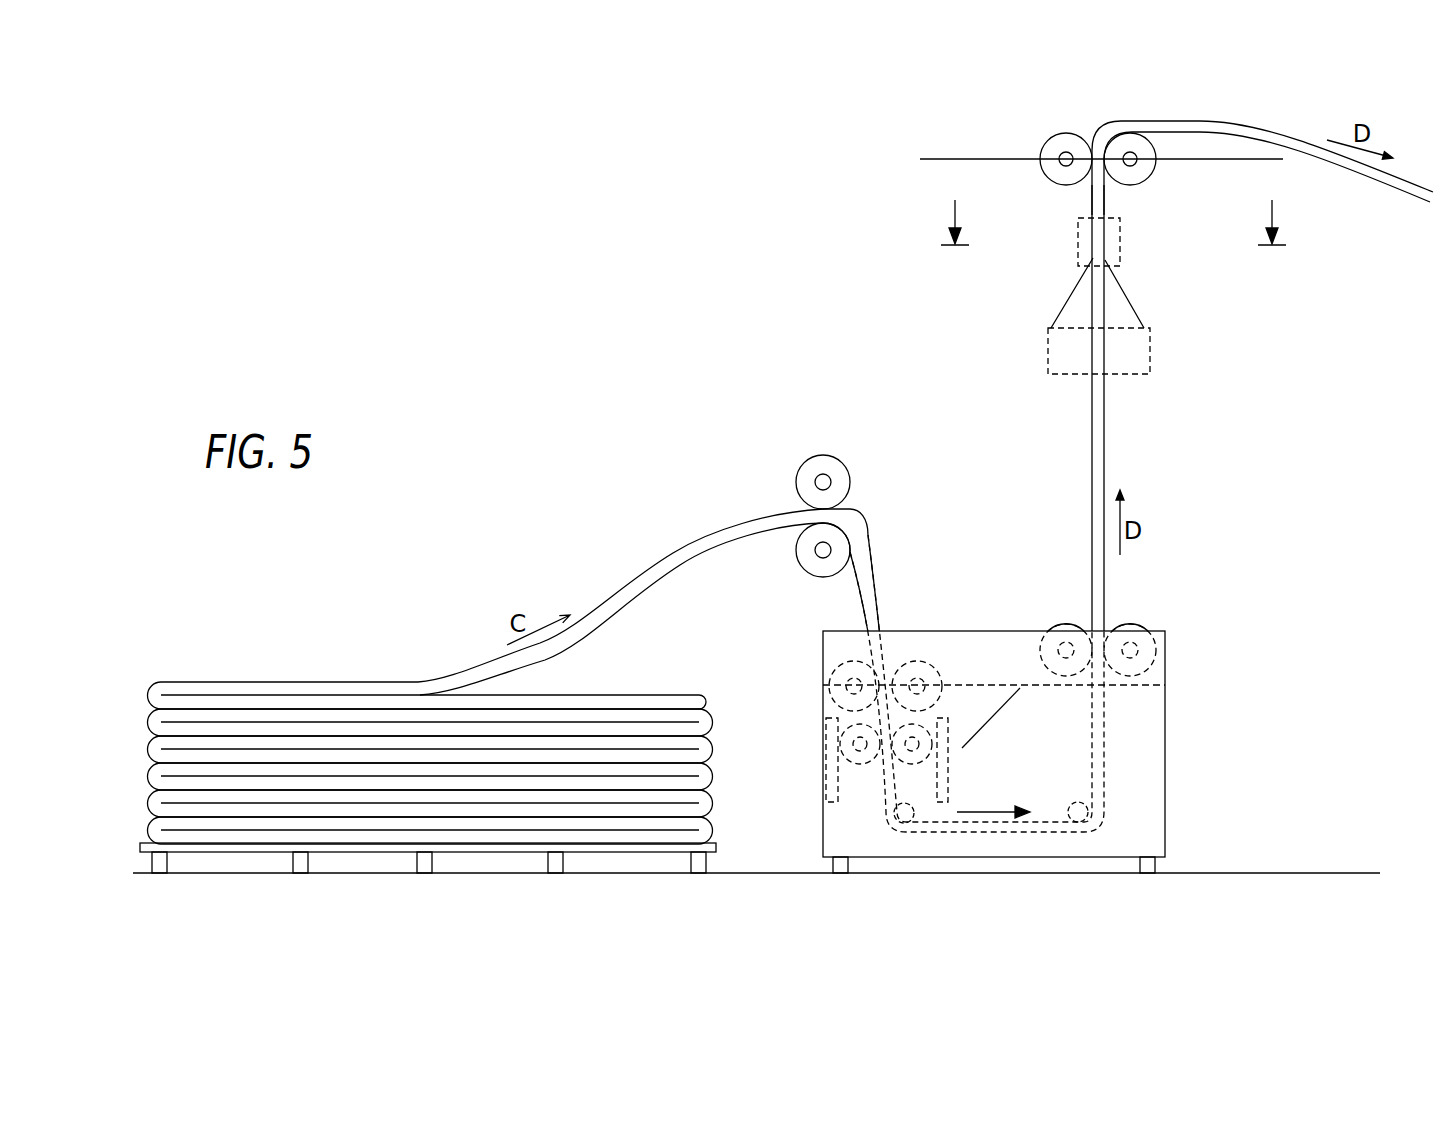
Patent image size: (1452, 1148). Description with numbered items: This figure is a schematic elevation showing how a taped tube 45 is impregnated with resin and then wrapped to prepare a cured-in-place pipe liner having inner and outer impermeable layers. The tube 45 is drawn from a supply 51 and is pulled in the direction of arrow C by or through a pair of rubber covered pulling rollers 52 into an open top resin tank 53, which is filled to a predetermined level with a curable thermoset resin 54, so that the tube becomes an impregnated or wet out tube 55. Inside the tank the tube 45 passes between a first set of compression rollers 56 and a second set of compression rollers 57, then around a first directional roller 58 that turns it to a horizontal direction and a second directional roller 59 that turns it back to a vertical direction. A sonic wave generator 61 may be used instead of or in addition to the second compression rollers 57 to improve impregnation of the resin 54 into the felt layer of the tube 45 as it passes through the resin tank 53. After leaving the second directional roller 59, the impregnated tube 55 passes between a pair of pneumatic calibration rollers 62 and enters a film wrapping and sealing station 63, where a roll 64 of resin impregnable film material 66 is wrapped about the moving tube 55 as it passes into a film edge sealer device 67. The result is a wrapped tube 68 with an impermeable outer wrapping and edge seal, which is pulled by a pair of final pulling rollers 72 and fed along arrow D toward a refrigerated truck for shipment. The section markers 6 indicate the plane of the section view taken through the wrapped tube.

The taped tube 45 is at (628, 583).
The supply 51 is at (241, 655).
The pulling rollers 52 is at (807, 465).
The resin tank 53 is at (1165, 758).
The curable thermoset resin 54 is at (1142, 748).
The impregnated tube 55 is at (1090, 487).
The first set of compression rollers 56 is at (848, 662).
The second set of compression rollers 57 is at (822, 702).
The first directional roller 58 is at (892, 821).
The second directional roller 59 is at (1070, 823).
The sonic wave generator 61 is at (832, 803).
The pneumatic calibration rollers 62 is at (1070, 622).
The film wrapping and sealing station 63 is at (1096, 274).
The roll 64 is at (1062, 352).
The resin impregnable film material 66 is at (1068, 300).
The film edge sealer device 67 is at (1080, 222).
The wrapped tube 68 is at (1098, 193).
The final pulling rollers 72 is at (1052, 140).
The section line 6- 6 is at (1113, 208).